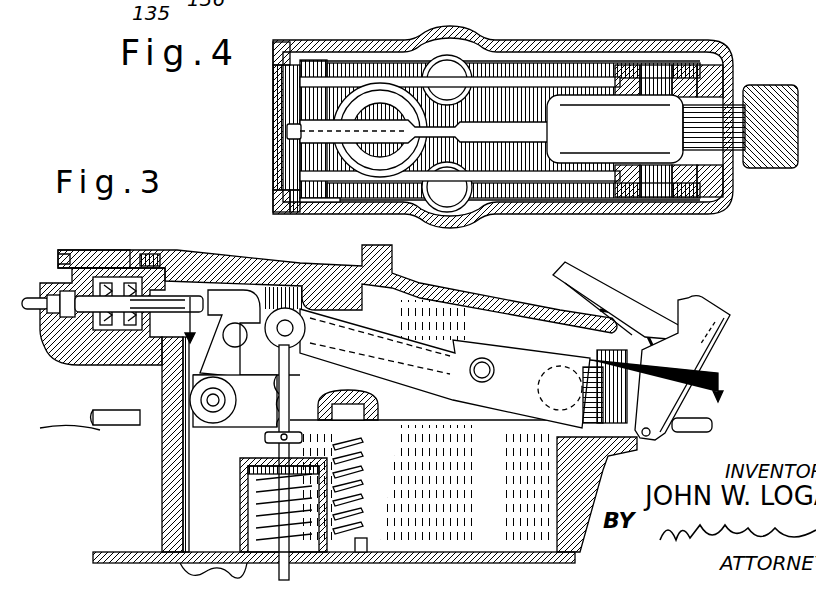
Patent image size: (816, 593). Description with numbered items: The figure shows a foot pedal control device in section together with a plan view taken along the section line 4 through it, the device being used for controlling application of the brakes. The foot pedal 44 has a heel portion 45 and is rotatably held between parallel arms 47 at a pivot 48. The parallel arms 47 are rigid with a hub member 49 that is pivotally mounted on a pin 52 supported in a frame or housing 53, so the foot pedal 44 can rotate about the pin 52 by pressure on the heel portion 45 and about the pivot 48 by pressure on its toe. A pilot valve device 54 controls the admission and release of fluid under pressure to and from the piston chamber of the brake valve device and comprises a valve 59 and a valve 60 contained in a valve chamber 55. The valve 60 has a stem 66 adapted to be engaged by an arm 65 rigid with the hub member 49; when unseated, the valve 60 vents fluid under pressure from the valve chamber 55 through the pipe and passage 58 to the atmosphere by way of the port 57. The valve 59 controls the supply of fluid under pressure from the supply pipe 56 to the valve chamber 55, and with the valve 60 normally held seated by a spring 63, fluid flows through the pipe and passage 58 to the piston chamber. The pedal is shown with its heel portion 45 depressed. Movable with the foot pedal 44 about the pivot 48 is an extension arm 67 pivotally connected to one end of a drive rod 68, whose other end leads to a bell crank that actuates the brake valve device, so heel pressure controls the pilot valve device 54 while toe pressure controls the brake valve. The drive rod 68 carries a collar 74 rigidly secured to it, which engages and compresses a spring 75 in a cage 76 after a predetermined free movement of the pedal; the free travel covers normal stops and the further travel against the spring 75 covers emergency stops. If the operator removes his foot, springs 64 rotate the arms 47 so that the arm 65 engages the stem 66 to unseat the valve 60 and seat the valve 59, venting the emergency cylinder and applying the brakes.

In FIG. 3, the section line 4— 4 is at (456, 362).
In FIG. 3, the foot pedal 44 is at (606, 292).
In FIG. 3, the heel portion 45 is at (706, 322).
In FIG. 4, the parallel arms 47 is at (522, 76).
In FIG. 3, the parallel arms 47 is at (418, 408).
In FIG. 4, the pivot 48 is at (655, 80).
In FIG. 3, the pivot 48 is at (554, 382).
In FIG. 4, the hub member 49 is at (310, 108).
In FIG. 4, the pin 52 is at (308, 210).
In FIG. 3, the pin 52 is at (212, 406).
In FIG. 4, the frame or housing 53 is at (333, 208).
In FIG. 3, the frame or housing 53 is at (163, 493).
In FIG. 3, the pilot valve device 54 is at (77, 363).
In FIG. 3, the valve chamber 55 is at (118, 270).
In FIG. 3, the supply pipe 56 is at (32, 300).
In FIG. 3, the port 57 is at (178, 296).
In FIG. 3, the pipe and passage 58 is at (96, 422).
In FIG. 3, the valve 59 is at (86, 268).
In FIG. 3, the valve 60 is at (152, 256).
In FIG. 3, the spring 63 is at (110, 332).
In FIG. 3, the springs 64 is at (366, 490).
In FIG. 3, the arm 65 is at (220, 296).
In FIG. 3, the stem 66 is at (218, 300).
In FIG. 4, the extension arm 67 is at (423, 129).
In FIG. 3, the extension arm 67 is at (397, 333).
In FIG. 3, the drive rod 68 is at (277, 420).
In FIG. 3, the collar 74 is at (300, 440).
In FIG. 3, the spring 75 is at (250, 484).
In FIG. 3, the cage 76 is at (246, 508).